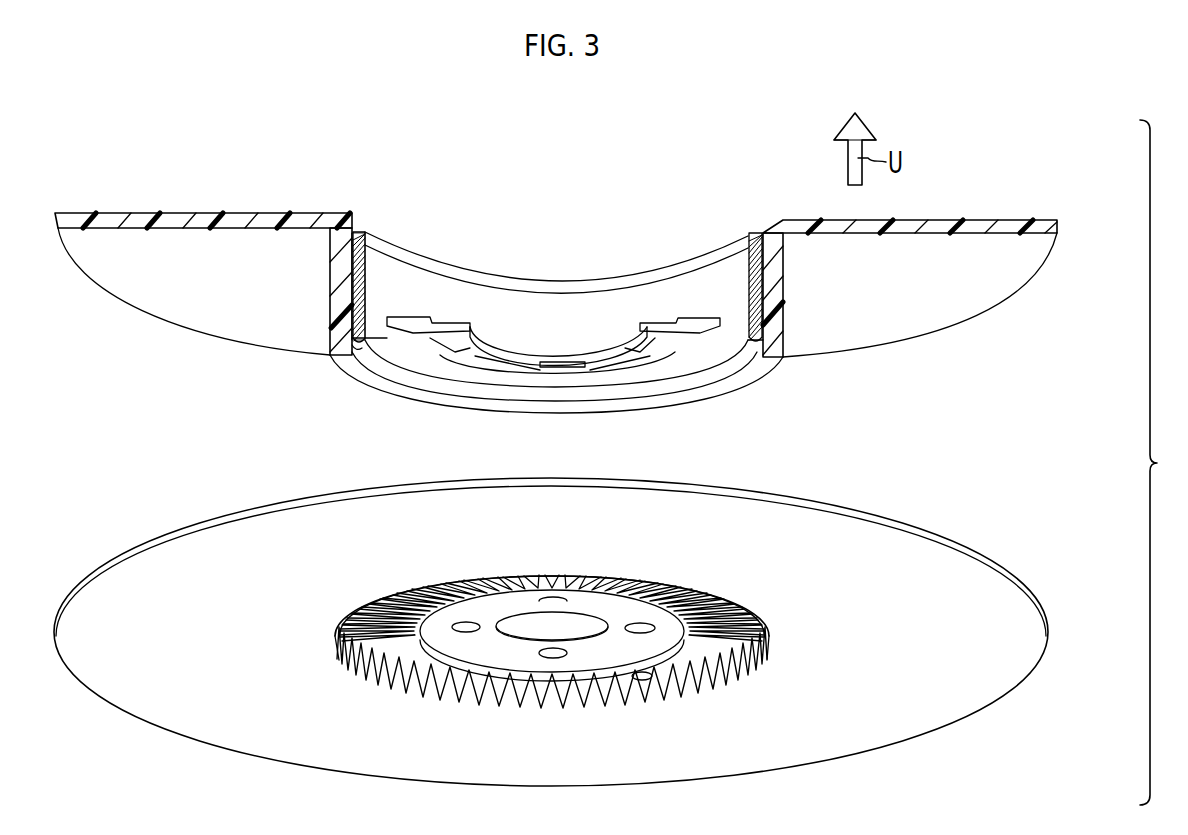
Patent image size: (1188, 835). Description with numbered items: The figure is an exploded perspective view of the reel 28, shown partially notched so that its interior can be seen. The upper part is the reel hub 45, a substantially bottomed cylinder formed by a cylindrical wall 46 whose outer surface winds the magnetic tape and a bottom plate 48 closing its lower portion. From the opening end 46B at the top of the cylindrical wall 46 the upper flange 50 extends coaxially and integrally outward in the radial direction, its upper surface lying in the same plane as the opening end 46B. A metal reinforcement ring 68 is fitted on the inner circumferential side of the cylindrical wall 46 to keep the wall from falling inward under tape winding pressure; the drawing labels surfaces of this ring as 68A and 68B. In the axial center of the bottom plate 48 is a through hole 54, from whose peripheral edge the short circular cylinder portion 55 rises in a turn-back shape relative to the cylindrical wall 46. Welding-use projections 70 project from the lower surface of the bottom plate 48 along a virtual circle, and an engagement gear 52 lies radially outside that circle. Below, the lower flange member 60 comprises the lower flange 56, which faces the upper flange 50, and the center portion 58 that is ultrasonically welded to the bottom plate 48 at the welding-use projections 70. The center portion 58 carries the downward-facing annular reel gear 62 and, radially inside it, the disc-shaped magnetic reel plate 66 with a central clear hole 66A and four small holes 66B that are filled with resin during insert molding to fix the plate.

The reel 28 is at (1076, 168).
The reel hub 45 is at (868, 358).
The cylindrical wall 46 is at (783, 290).
The opening end 46B is at (353, 233).
The bottom plate 48 is at (683, 355).
The upper flange 50 is at (985, 292).
The engagement gear 52 is at (405, 318).
The through hole 54 is at (500, 336).
The short circular cylinder portion 55 is at (626, 345).
The lower flange 56 is at (856, 553).
The center portion 58 is at (697, 572).
The lower flange member 60 is at (935, 422).
The reel gear 62 is at (738, 628).
The reel plate 66 is at (625, 607).
The clear hole 66A is at (518, 627).
The small holes 66B is at (463, 625).
The reinforcement ring 68 is at (752, 232).
The seal wall 68A is at (457, 268).
The seal lip 68B is at (353, 347).
The welding-use projections 70 is at (455, 337).